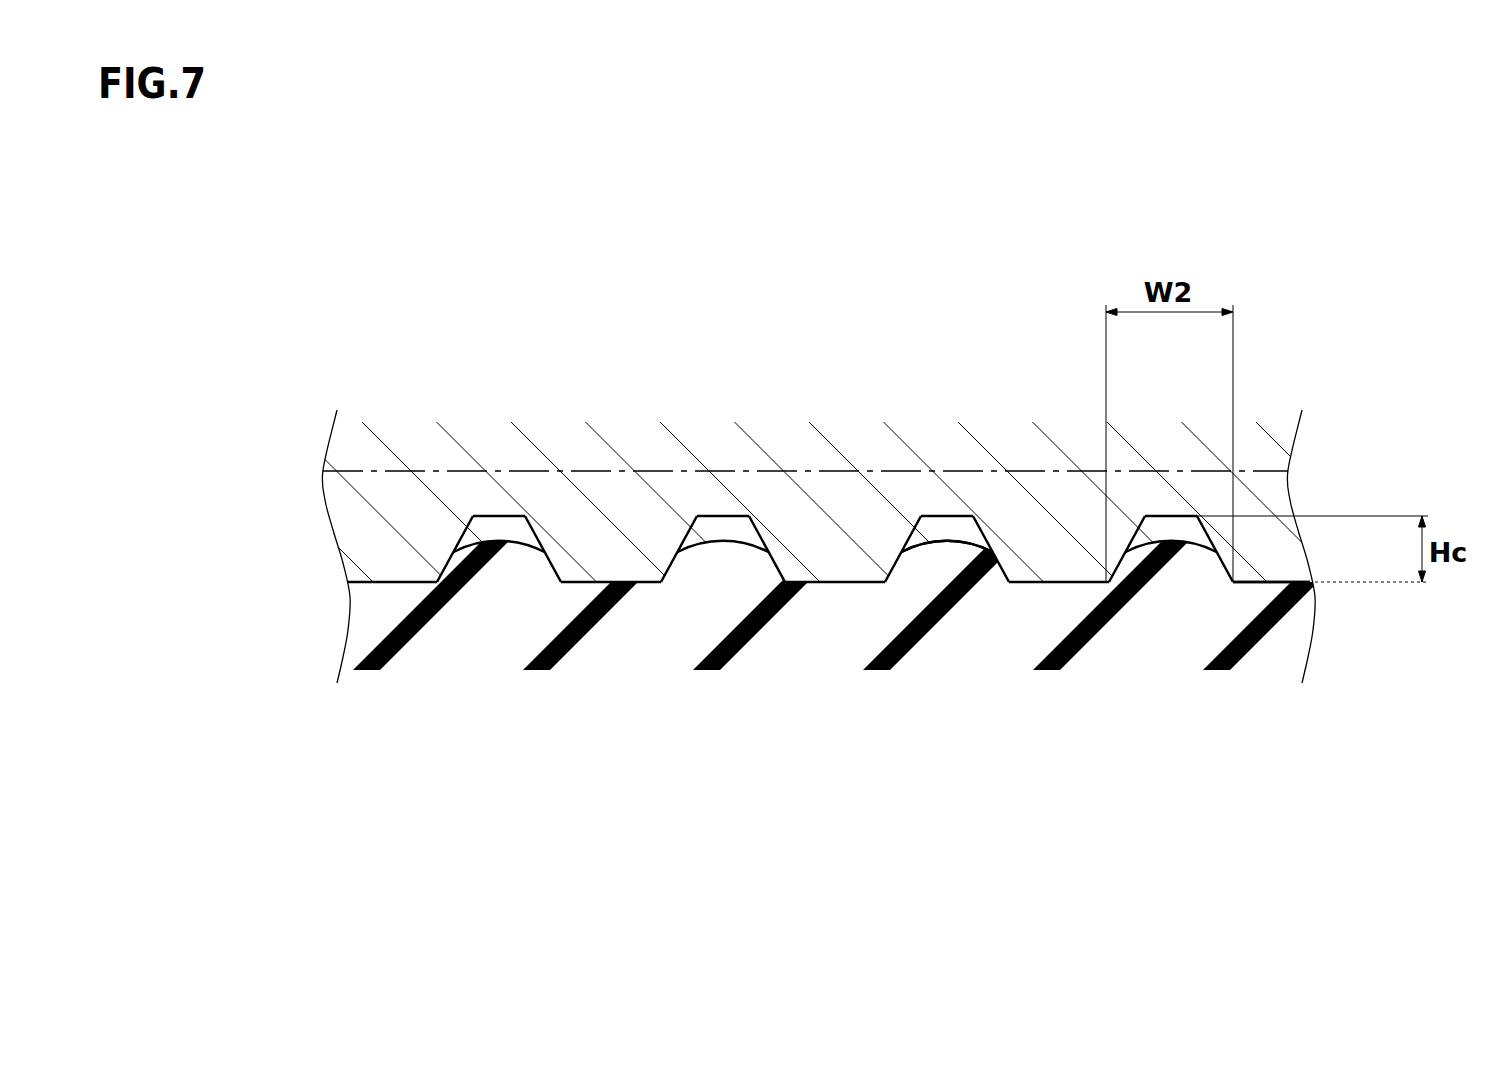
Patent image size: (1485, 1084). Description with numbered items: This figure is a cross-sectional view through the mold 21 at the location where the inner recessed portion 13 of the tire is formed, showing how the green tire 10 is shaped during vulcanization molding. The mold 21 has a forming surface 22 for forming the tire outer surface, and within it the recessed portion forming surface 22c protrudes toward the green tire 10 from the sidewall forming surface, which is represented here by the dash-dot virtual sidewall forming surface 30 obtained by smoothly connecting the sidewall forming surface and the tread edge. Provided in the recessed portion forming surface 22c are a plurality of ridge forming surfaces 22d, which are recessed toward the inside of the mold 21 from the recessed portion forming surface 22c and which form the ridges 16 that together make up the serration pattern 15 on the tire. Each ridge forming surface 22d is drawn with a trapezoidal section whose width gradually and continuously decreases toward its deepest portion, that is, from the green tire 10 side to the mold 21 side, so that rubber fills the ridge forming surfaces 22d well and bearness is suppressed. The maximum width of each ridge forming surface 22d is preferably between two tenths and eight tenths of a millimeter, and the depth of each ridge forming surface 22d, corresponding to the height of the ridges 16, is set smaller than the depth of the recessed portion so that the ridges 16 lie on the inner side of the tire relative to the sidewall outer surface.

The green tire 10 is at (828, 704).
The inner recessed portion 13 is at (1280, 571).
The serration pattern 15 is at (930, 524).
The ridges 16 is at (501, 530).
The mold 21 is at (627, 336).
The forming surface 22 is at (737, 483).
The recessed portion forming surface 22c is at (375, 583).
The ridge forming surfaces 22d is at (488, 516).
The virtual sidewall forming surface 30 is at (425, 471).